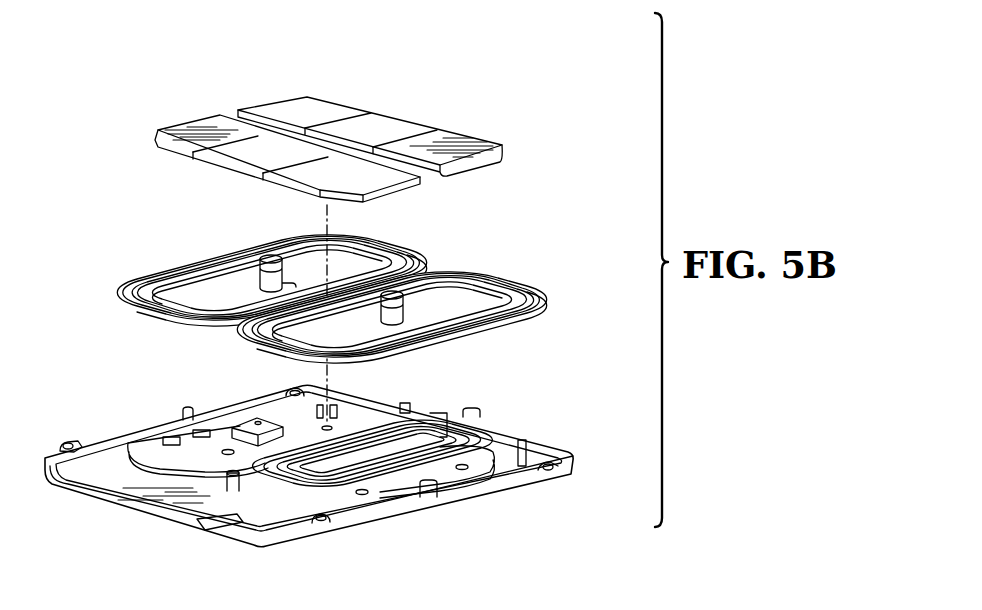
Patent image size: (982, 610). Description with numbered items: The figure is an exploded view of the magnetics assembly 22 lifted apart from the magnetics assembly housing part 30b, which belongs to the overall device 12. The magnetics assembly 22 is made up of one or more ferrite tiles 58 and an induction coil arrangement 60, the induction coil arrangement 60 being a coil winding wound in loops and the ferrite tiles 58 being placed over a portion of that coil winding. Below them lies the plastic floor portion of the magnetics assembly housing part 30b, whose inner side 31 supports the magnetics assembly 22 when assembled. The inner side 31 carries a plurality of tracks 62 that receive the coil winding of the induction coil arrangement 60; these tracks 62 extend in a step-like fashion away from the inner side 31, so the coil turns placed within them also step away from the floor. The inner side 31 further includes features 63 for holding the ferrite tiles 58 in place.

The wireless charging device 12 is at (513, 73).
The magnetics assembly 22 is at (582, 362).
The ferrite tiles 58 is at (263, 162).
The induction coil arrangement 60 is at (467, 328).
The tracks 62 is at (290, 475).
The features 63 is at (226, 443).
The magnetics assembly housing part 30b is at (528, 490).
The inner side 31 is at (120, 477).